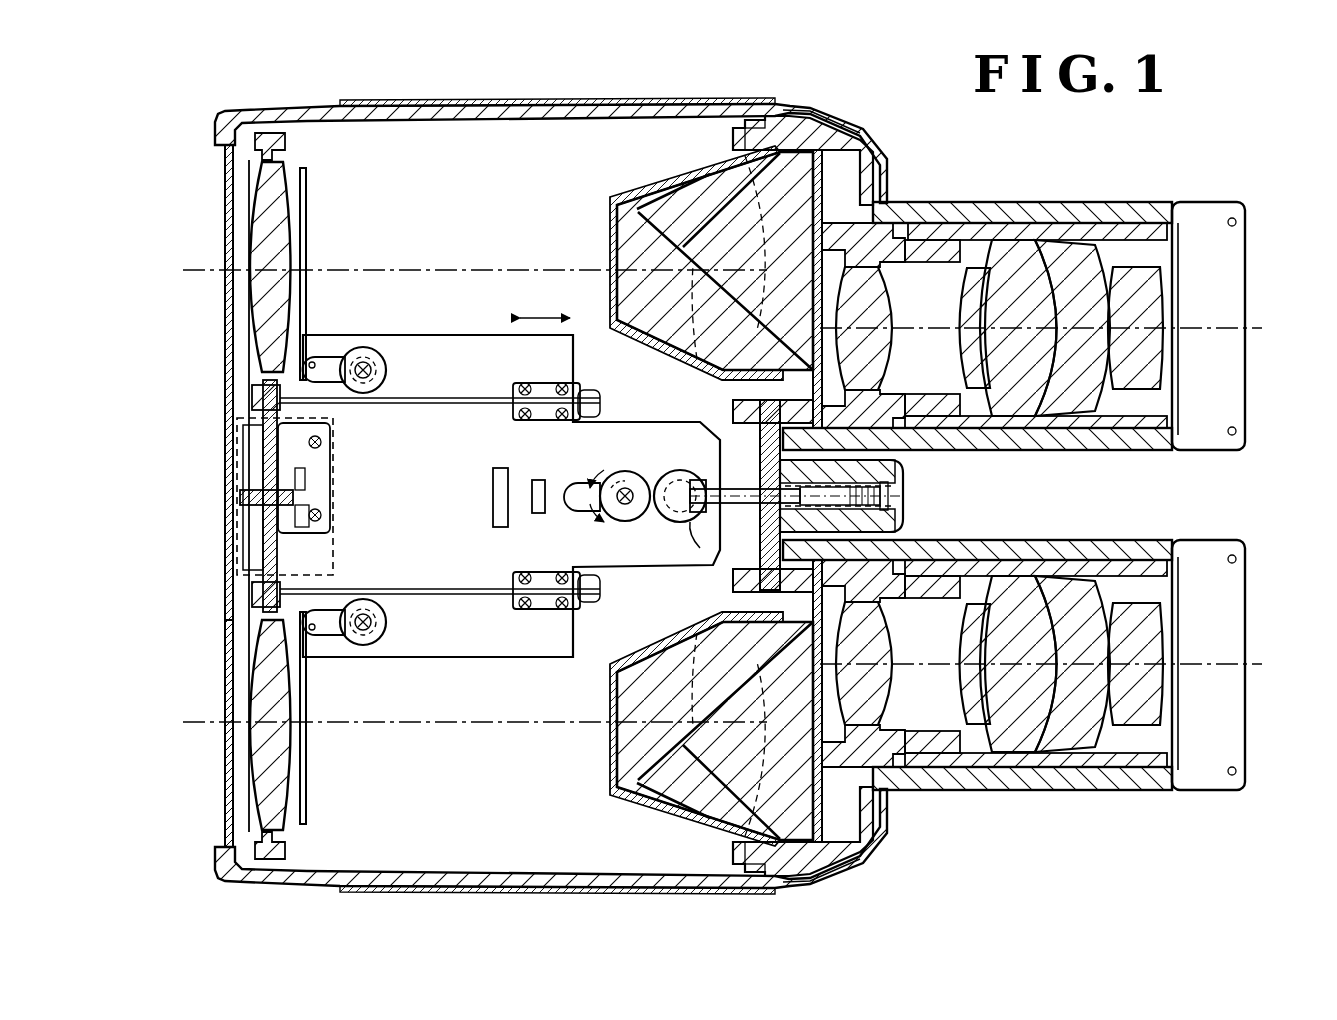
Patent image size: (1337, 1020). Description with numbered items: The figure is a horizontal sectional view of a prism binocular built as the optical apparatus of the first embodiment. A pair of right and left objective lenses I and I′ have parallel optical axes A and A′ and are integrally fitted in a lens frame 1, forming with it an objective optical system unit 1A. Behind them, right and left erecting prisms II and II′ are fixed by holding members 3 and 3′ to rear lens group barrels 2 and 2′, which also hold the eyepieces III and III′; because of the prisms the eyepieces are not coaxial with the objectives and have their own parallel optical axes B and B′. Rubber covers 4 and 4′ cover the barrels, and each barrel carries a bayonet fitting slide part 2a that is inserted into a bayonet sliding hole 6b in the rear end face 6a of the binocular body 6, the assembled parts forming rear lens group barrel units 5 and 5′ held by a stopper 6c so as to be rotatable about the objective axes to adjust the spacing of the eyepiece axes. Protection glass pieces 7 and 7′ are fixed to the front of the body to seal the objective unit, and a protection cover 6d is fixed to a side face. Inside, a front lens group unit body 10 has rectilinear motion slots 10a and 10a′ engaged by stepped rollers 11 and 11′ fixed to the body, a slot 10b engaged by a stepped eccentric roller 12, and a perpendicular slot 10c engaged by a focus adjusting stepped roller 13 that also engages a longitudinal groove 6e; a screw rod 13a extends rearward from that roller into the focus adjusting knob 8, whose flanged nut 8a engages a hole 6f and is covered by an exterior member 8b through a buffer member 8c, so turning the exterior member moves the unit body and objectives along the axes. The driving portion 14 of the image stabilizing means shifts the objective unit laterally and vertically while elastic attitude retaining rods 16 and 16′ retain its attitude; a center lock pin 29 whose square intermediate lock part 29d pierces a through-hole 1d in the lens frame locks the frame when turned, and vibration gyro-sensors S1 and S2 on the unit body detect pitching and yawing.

The lens frame 1 is at (258, 400).
The objective optical system unit 1A is at (252, 584).
The through-hole 1d is at (240, 497).
The rear lens group barrel 2 is at (925, 232).
The rear lens group barrel 2′ is at (930, 768).
The bayonet fitting slide part 2a is at (800, 110).
The holding member 3 is at (698, 168).
The holding member 3′ is at (665, 820).
The rubber cover 4 is at (1118, 216).
The rubber cover 4′ is at (1140, 778).
The rear lens group barrel unit 5 is at (1204, 198).
The rear lens group barrel unit 5′ is at (1207, 798).
The binocular body 6 is at (515, 104).
The rear end face 6a is at (757, 418).
The bayonet sliding hole 6b is at (772, 128).
The stopper 6c is at (750, 130).
The protection cover 6d is at (455, 99).
The longitudinal groove 6e is at (690, 522).
The hole 6f is at (757, 522).
The protection glass piece 7 is at (225, 220).
The protection glass piece 7′ is at (225, 822).
The focus adjusting knob 8 is at (995, 462).
The flanged nut 8a is at (902, 470).
The exterior member 8b is at (902, 522).
The buffer member 8c is at (762, 468).
The front lens group unit body 10 is at (500, 355).
The rectilinear motion slot 10a is at (318, 360).
The rectilinear motion slot 10a′ is at (318, 636).
The rectilinear motion slot 10b is at (575, 483).
The rectilinear motion slot 10c is at (686, 528).
The stepped roller 11 is at (372, 350).
The stepped roller 11′ is at (372, 645).
The stepped eccentric roller 12 is at (615, 520).
The focus adjusting stepped roller 13 is at (658, 480).
The screw rod 13a is at (700, 480).
The driving portion of the image stabilizing means 14 is at (233, 548).
The attitude retaining rod 16 is at (450, 398).
The attitude retaining rod 16′ is at (450, 595).
The center lock pin 29 is at (314, 487).
The intermediate part (lock part) 29d is at (263, 517).
The vibration gyro-sensor S1 is at (500, 507).
The vibration gyro-sensor S2 is at (540, 515).
The objective lens I is at (272, 220).
The objective lens I′ is at (290, 785).
The erecting prism II is at (630, 237).
The erecting prism II′ is at (628, 767).
The eyepiece III is at (1038, 246).
The eyepiece III′ is at (1040, 748).
The optical axis A is at (183, 274).
The optical axis A′ is at (183, 726).
The optical axis B is at (1262, 328).
The optical axis B′ is at (1262, 664).